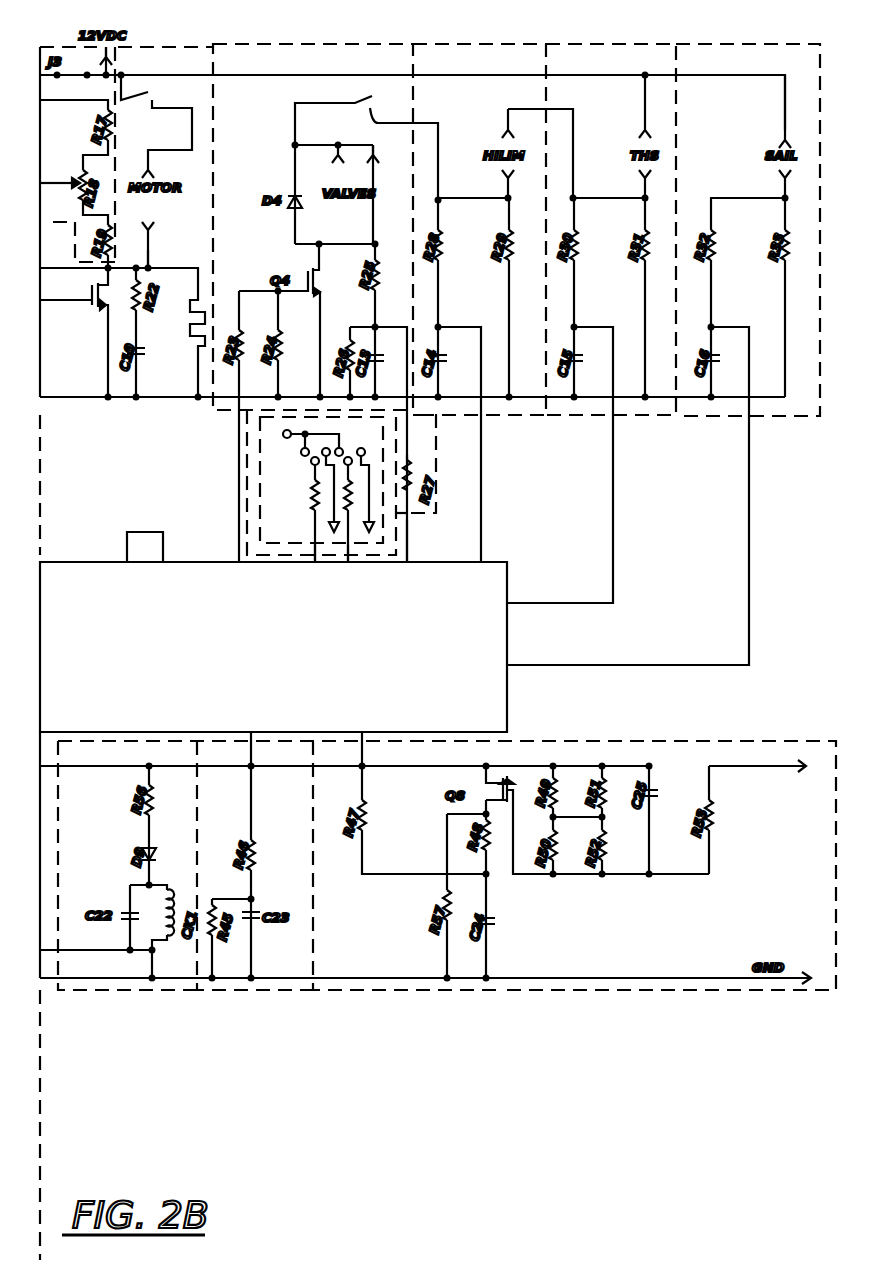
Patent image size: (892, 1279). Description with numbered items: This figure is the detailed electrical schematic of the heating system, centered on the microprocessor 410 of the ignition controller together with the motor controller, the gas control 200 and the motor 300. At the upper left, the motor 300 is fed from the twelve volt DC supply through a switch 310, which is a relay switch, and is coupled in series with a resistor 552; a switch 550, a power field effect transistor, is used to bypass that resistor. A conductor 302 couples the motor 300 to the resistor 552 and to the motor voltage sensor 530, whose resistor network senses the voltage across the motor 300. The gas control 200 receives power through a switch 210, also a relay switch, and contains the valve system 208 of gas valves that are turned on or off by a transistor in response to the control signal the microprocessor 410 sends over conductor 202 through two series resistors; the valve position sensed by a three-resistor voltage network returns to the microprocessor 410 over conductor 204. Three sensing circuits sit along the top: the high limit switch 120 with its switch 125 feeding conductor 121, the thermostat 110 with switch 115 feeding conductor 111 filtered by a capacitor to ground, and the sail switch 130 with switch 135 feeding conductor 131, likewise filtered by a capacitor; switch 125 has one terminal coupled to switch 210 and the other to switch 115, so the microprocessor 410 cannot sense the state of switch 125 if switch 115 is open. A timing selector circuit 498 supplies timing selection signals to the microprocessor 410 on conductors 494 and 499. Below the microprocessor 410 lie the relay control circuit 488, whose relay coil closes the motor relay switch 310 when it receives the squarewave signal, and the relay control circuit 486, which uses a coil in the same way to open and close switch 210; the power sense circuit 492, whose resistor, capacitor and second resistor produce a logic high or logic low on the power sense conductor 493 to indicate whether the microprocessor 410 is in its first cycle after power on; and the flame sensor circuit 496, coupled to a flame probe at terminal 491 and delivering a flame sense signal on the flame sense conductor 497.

The motor voltage sensor 530 is at (118, 54).
The switch 310 is at (150, 103).
The motor 300 is at (152, 222).
The conductor 302 is at (158, 252).
The resistor 552 is at (200, 284).
The switch 550 is at (103, 312).
The gas control 200 is at (318, 47).
The switch 210 is at (366, 143).
The valve system 208 is at (372, 205).
The high limit switch 120 is at (478, 47).
The thermostat 110 is at (608, 47).
The sail switch 130 is at (743, 47).
The switch 125 is at (503, 186).
The switch 115 is at (640, 186).
The switch 135 is at (785, 109).
The timing selector circuit 498 is at (259, 452).
The conductor 202 is at (285, 482).
The conductor 204 is at (410, 540).
The conductor 121 is at (484, 524).
The conductor 111 is at (616, 524).
The conductor 131 is at (641, 670).
The conductor 494 is at (316, 552).
The conductor 499 is at (352, 556).
The microprocessor 410 is at (300, 642).
The power sense conductor 493 is at (253, 748).
The flame sense conductor 497 is at (364, 745).
The terminal 491 is at (762, 770).
The relay control circuit 488 is at (55, 1000).
The relay control circuit 486 is at (148, 1000).
The power sense circuit 492 is at (278, 1000).
The flame sensor circuit 496 is at (705, 992).